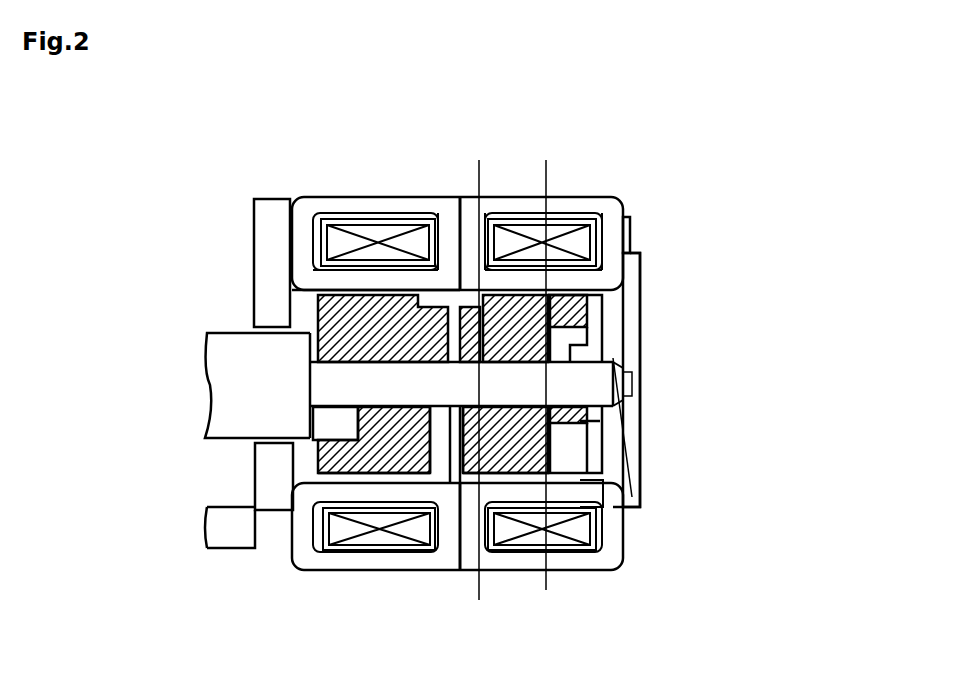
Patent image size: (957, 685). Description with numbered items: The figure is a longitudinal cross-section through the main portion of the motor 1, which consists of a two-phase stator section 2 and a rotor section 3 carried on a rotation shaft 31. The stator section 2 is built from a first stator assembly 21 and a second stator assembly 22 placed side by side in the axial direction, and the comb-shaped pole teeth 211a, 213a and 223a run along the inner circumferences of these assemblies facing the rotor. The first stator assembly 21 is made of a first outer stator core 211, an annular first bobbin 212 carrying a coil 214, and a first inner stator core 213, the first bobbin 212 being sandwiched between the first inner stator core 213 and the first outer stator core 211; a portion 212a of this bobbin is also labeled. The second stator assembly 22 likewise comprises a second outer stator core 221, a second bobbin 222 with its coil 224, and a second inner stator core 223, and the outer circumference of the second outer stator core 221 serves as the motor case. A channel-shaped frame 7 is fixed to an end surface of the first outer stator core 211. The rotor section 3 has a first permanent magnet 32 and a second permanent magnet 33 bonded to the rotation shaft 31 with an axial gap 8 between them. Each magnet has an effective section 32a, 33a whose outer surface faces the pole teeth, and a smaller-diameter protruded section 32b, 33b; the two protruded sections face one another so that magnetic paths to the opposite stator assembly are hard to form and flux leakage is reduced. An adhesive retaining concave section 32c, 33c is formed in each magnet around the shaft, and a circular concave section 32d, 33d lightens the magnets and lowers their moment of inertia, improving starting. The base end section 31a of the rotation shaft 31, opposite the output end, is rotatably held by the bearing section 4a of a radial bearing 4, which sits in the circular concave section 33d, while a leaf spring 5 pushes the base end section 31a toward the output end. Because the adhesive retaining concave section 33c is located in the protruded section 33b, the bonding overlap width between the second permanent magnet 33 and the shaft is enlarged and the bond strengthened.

The motor 1 is at (828, 183).
The stator section 2 is at (842, 262).
The rotor section 3 is at (309, 607).
The radial bearing 4 is at (630, 303).
The bearing section 4a is at (645, 368).
The leaf spring 5 is at (600, 390).
The frame 7 is at (241, 545).
The gap 8 is at (452, 445).
The first stator assembly 21 is at (332, 194).
The second stator assembly 22 is at (606, 194).
The first outer stator core 211 is at (313, 200).
The pole teeth 211a is at (357, 277).
The first bobbin 212 is at (270, 207).
The pole plate portion 212a is at (630, 250).
The first inner stator core 213 is at (448, 228).
The pole teeth 213a is at (412, 268).
The coil 214 is at (385, 232).
The second outer stator core 221 is at (623, 200).
The second bobbin 222 is at (625, 215).
The second inner stator core 223 is at (465, 225).
The pole teeth 223a is at (585, 265).
The coil 224 is at (572, 235).
The rotation shaft 31 is at (337, 382).
The base end section 31a is at (623, 377).
The first permanent magnet 32 is at (307, 468).
The effective section 32a is at (348, 478).
The protruded section 32b is at (422, 448).
The adhesive retaining concave section 32c is at (440, 340).
The circular concave section 32d is at (335, 420).
The second permanent magnet 33 is at (635, 478).
The effective section 33a is at (566, 478).
The protruded section 33b is at (458, 447).
The adhesive retaining concave section 33c is at (600, 421).
The circular concave section 33d is at (600, 442).